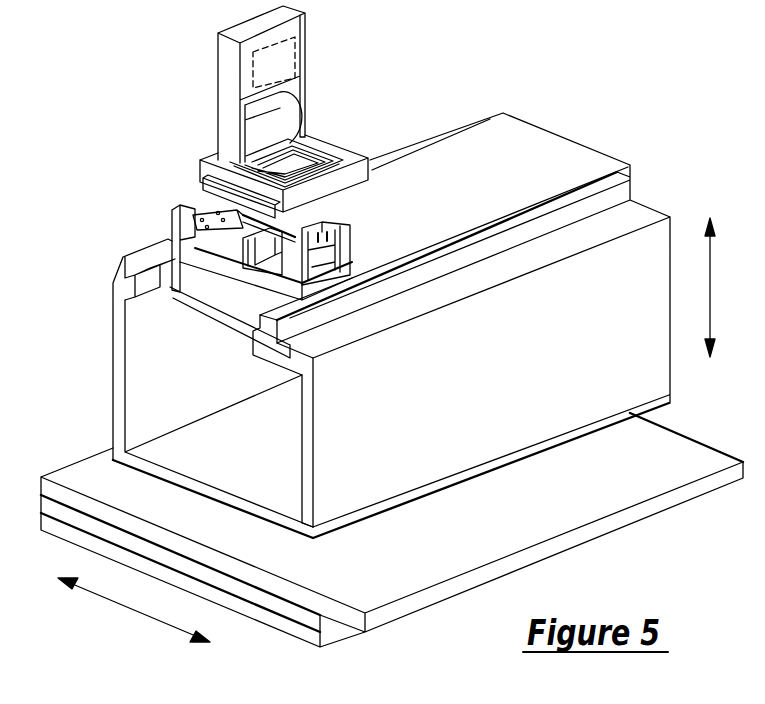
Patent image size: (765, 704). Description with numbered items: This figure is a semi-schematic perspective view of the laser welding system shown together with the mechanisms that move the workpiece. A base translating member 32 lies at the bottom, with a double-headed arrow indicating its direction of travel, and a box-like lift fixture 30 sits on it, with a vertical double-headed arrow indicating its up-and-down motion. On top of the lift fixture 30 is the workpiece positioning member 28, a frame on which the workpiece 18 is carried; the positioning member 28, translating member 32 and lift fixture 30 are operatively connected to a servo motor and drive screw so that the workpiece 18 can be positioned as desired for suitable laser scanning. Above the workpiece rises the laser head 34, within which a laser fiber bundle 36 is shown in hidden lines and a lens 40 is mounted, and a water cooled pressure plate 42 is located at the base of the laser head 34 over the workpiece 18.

The workpiece 18 is at (331, 220).
The workpiece positioning member 28 is at (348, 242).
The lift fixture 30 is at (523, 374).
The translating member 32 is at (383, 581).
The laser head 34 is at (302, 63).
The laser fiber bundle 36 is at (297, 37).
The lens 40 is at (284, 123).
The water cooled pressure plate 42 is at (273, 170).